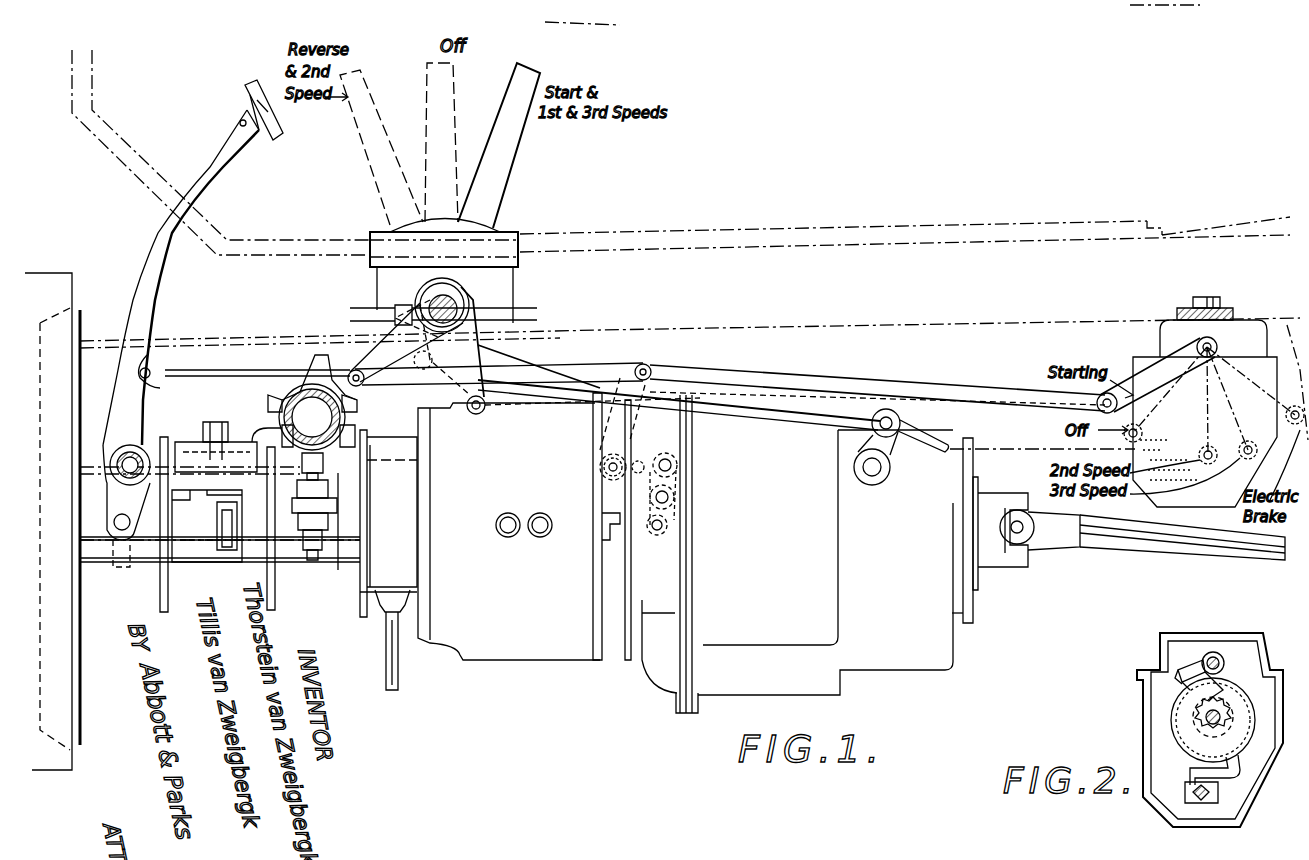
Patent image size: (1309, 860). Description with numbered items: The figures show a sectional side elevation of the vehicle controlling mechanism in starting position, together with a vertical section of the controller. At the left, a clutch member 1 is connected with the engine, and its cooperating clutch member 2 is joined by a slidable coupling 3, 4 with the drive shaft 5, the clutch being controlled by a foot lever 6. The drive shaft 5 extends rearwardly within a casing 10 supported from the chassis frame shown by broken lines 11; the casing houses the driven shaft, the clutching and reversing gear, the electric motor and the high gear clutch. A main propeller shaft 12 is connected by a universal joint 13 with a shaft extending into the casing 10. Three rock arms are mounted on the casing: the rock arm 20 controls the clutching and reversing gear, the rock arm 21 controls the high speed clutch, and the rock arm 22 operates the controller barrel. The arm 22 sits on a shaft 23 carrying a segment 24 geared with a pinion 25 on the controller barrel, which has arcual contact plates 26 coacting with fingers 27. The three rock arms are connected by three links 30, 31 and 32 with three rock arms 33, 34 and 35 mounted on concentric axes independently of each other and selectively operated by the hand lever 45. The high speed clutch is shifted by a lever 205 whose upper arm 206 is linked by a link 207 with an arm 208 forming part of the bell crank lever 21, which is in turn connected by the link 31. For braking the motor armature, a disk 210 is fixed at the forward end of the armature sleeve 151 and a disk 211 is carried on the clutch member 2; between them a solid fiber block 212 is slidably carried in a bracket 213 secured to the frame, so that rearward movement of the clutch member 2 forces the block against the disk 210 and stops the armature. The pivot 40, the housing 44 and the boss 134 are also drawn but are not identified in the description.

In FIG. 1, the clutch member 1 is at (45, 740).
In FIG. 1, the cooperating clutch member 2 is at (82, 672).
In FIG. 1, the slidable coupling 3 is at (178, 562).
In FIG. 1, the slidable coupling 4 is at (222, 552).
In FIG. 1, the drive shaft 5 is at (258, 545).
In FIG. 1, the foot lever 6 is at (145, 263).
In FIG. 1, the casing 10 is at (685, 553).
In FIG. 1, the chassis frame 11 is at (950, 338).
In FIG. 1, the main propeller shaft 12 is at (1160, 540).
In FIG. 1, the universal joint 13 is at (1025, 567).
In FIG. 1, the rock arm 20 is at (890, 440).
In FIG. 1, the rock arm 21 is at (605, 438).
In FIG. 1, the rock arm 22 is at (1120, 380).
In FIG. 1, the shaft 23 is at (1215, 343).
In FIG. 2, the shaft 23 is at (1220, 655).
In FIG. 2, the segment 24 is at (1178, 665).
In FIG. 2, the pinion 25 is at (1200, 712).
In FIG. 2, the arcual contact plates 26 is at (1190, 745).
In FIG. 2, the fingers 27 is at (1240, 768).
In FIG. 1, the link 30 is at (838, 420).
In FIG. 1, the link 31 is at (640, 363).
In FIG. 1, the link 32 is at (935, 392).
In FIG. 1, the rock arm 33 is at (470, 358).
In FIG. 1, the rock arm 34 is at (493, 330).
In FIG. 1, the rock arm 35 is at (348, 358).
In FIG. 1, the pivot shaft 40 is at (462, 293).
In FIG. 1, the gear shift housing 44 is at (444, 271).
In FIG. 1, the hand lever 45 is at (513, 150).
In FIG. 1, the pivot boss 134 is at (866, 485).
In FIG. 1, the armature sleeve 151 is at (300, 560).
In FIG. 1, the lever 205 is at (668, 522).
In FIG. 1, the upper arm 206 is at (675, 490).
In FIG. 1, the link 207 is at (675, 435).
In FIG. 1, the arm 208 is at (605, 475).
In FIG. 1, the disk 210 is at (285, 596).
In FIG. 1, the disk 211 is at (160, 590).
In FIG. 1, the solid fiber block 212 is at (180, 440).
In FIG. 1, the bracket 213 is at (235, 438).